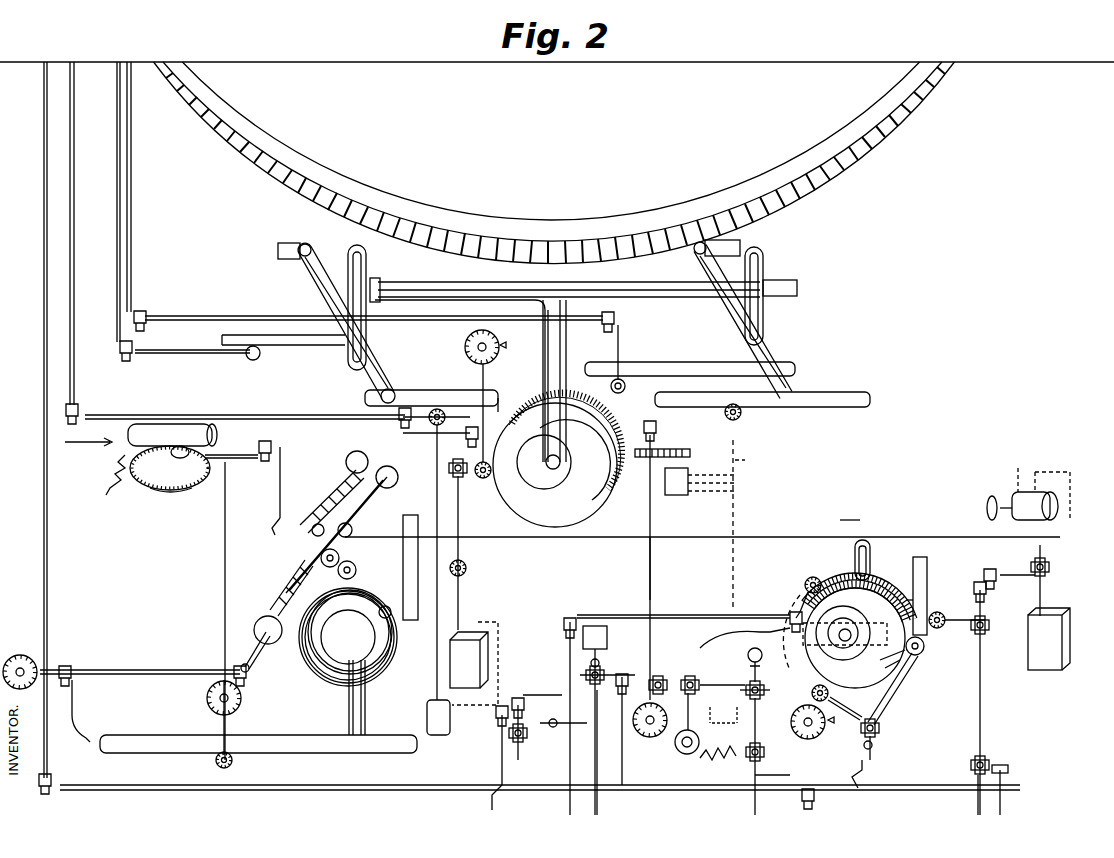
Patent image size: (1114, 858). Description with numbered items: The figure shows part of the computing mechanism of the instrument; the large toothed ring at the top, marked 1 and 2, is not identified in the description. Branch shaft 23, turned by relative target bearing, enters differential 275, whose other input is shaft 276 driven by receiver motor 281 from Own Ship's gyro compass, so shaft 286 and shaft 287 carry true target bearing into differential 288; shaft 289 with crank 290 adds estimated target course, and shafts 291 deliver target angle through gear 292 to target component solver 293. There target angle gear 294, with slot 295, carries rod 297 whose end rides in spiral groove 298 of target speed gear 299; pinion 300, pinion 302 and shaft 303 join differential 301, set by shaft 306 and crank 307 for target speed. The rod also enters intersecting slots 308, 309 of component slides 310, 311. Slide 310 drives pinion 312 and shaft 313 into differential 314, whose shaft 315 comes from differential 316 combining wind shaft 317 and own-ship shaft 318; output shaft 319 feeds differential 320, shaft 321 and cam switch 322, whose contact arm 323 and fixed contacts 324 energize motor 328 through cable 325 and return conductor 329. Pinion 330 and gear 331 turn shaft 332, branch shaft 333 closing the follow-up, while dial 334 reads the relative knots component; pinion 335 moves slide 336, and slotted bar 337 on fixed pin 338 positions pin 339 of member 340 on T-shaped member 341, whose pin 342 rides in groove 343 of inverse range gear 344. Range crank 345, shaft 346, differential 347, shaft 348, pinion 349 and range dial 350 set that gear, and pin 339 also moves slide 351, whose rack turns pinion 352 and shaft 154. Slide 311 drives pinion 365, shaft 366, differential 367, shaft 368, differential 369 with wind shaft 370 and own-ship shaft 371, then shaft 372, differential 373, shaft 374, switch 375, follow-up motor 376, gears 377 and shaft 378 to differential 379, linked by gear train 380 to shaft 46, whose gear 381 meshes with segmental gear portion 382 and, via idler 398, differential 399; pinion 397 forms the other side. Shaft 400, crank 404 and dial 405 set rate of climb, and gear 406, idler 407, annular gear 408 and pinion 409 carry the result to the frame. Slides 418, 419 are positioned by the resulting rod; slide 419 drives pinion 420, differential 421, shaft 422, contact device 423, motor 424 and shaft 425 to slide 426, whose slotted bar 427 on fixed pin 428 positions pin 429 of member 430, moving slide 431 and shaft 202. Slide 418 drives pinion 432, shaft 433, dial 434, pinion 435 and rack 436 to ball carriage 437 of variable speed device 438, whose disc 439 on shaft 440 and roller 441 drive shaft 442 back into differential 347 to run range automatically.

The rotary ring flange 1 is at (850, 105).
The toothed ring gear 2 is at (858, 170).
The branch shaft 23 is at (43, 88).
The branch shaft 46 is at (74, 88).
The shaft 154 is at (132, 190).
The shaft 202 is at (118, 195).
The differential 275 is at (610, 677).
The shaft 276 is at (600, 662).
The receiver motor 281 is at (607, 636).
The shaft 286 is at (599, 806).
The shaft 287 is at (553, 728).
The differential 288 is at (508, 736).
The shaft 289 is at (500, 770).
The crank 290 is at (492, 804).
The shafts 291 is at (790, 612).
The gear 292 is at (805, 588).
The target component solver 293 is at (835, 576).
The target angle gear 294 is at (868, 578).
The slot 295 is at (805, 586).
The rod 297 is at (852, 705).
The spiral groove 298 is at (898, 655).
The target speed gear 299 is at (892, 668).
The pinion 300 is at (787, 690).
The differential 301 is at (884, 745).
The pinion 302 is at (925, 648).
The shaft 303 is at (885, 690).
The shaft 306 is at (872, 746).
The crank 307 is at (860, 782).
The slot 308 is at (866, 516).
The slot 309 is at (927, 588).
The component slide 310 is at (715, 644).
The component slide 311 is at (928, 568).
The pinion 312 is at (763, 656).
The shaft 313 is at (760, 670).
The differential 314 is at (765, 698).
The shaft 315 is at (812, 732).
The differential 316 is at (744, 765).
The shaft 317 is at (753, 799).
The shaft 318 is at (780, 777).
The shaft 319 is at (720, 684).
The differential 320 is at (688, 678).
The shaft 321 is at (686, 710).
The switch 322 is at (668, 747).
The pivoted contact arm 323 is at (700, 756).
The fixed contacts 324 is at (717, 704).
The cable 325 is at (732, 550).
The motor 328 is at (700, 494).
The return conductor 329 is at (746, 462).
The pinion 330 is at (690, 454).
The gear 331 is at (660, 450).
The shaft 332 is at (650, 505).
The branch shaft 333 is at (664, 618).
The dial 334 is at (642, 707).
The pinion 335 is at (742, 418).
The slide 336 is at (862, 398).
The slotted bar 337 is at (780, 350).
The fixed pin 338 is at (698, 253).
The pin 339 is at (760, 302).
The member 340 is at (770, 276).
The T-shaped member 341 is at (670, 296).
The pin 342 is at (572, 452).
The groove 343 is at (600, 440).
The gear 344 is at (550, 425).
The crank 345 is at (272, 522).
The shaft 346 is at (280, 486).
The differential 347 is at (254, 449).
The shaft 348 is at (486, 377).
The pinion 349 is at (483, 480).
The range dial 350 is at (465, 345).
The slide 351 is at (672, 362).
The pinion 352 is at (622, 380).
The pinion 365 is at (942, 616).
The shaft 366 is at (942, 628).
The differential 367 is at (986, 642).
The shaft 368 is at (982, 708).
The differential 369 is at (998, 764).
The shaft 370 is at (978, 798).
The shaft 371 is at (1003, 796).
The shaft 372 is at (1008, 580).
The differential 373 is at (1059, 567).
The shaft 374 is at (1044, 605).
The switch 375 is at (1048, 670).
The follow-up motor 376 is at (1012, 498).
The gears 377 is at (986, 510).
The shaft 378 is at (765, 536).
The differential 379 is at (334, 484).
The gear train 380 is at (412, 441).
The gear 381 is at (340, 556).
The segmental gear portion 382 is at (356, 568).
The pinion 397 is at (352, 530).
The idler 398 is at (303, 534).
The differential 399 is at (270, 584).
The shaft 400 is at (140, 670).
The crank 404 is at (92, 726).
The dial 405 is at (21, 662).
The gear 406 is at (264, 618).
The idler 407 is at (272, 648).
The annular gear 408 is at (330, 688).
The pinion 409 is at (392, 620).
The slide 418 is at (258, 733).
The slide 419 is at (412, 515).
The pinion 420 is at (460, 576).
The differential 421 is at (474, 572).
The shaft 422 is at (472, 622).
The contact device 423 is at (490, 638).
The motor 424 is at (435, 718).
The shaft 425 is at (436, 670).
The slide 426 is at (366, 398).
The slotted bar 427 is at (385, 348).
The fixed pin 428 is at (305, 245).
The pin 429 is at (362, 285).
The member 430 is at (382, 288).
The slide 431 is at (221, 338).
The pinion 432 is at (232, 764).
The shaft 433 is at (224, 565).
The dial 434 is at (207, 692).
The pinion 435 is at (200, 470).
The rack 436 is at (200, 472).
The ball carriage 437 is at (168, 466).
The variable speed device 438 is at (86, 442).
The disc 439 is at (185, 482).
The shaft 440 is at (116, 468).
The roller 441 is at (165, 428).
The shaft 442 is at (245, 434).